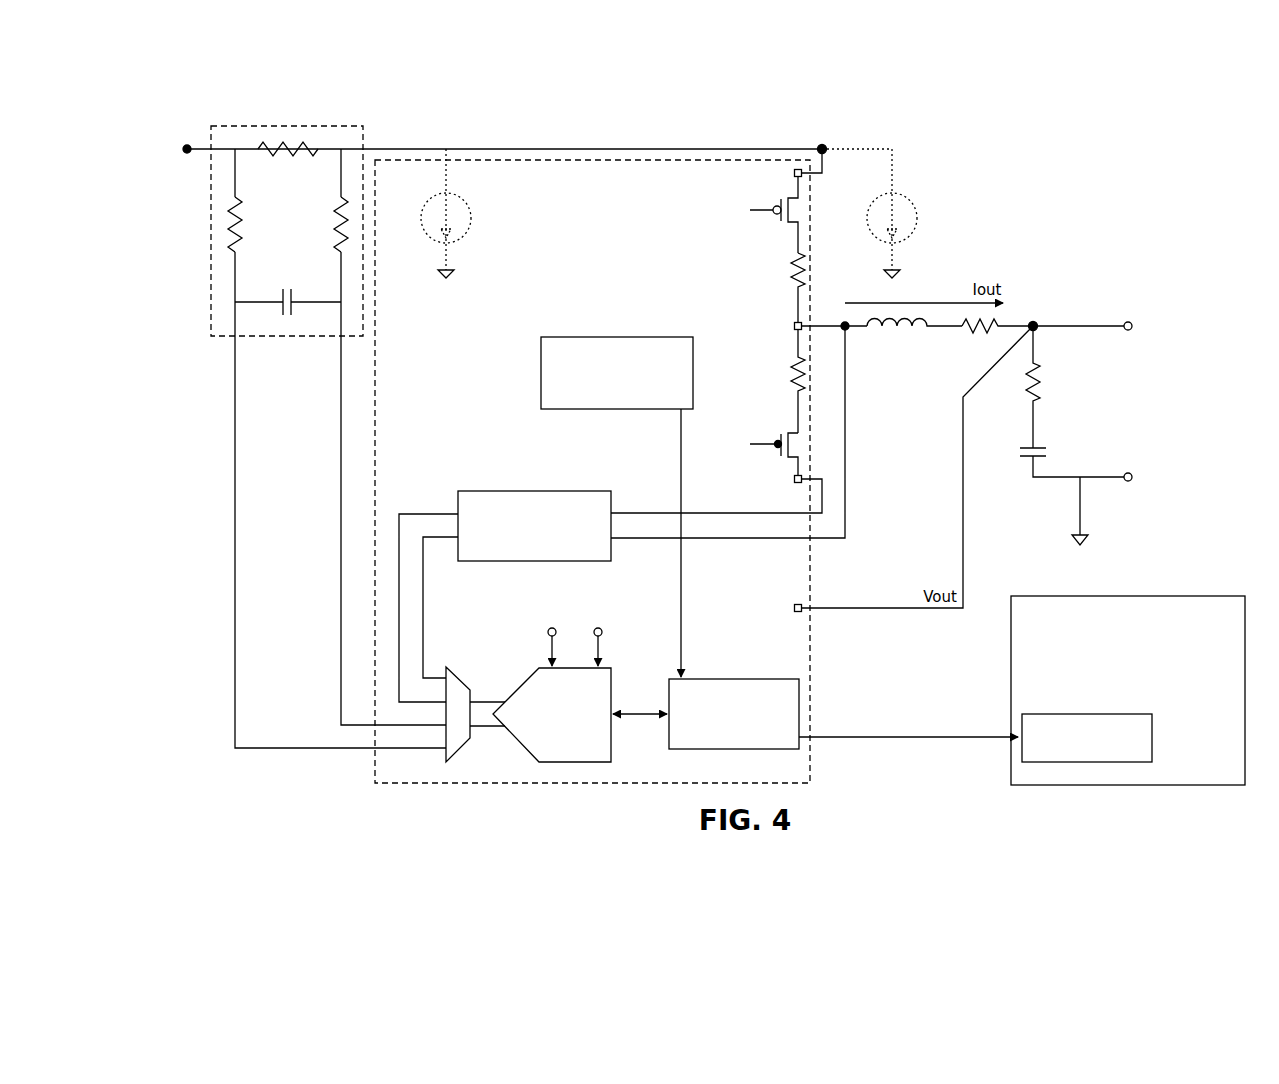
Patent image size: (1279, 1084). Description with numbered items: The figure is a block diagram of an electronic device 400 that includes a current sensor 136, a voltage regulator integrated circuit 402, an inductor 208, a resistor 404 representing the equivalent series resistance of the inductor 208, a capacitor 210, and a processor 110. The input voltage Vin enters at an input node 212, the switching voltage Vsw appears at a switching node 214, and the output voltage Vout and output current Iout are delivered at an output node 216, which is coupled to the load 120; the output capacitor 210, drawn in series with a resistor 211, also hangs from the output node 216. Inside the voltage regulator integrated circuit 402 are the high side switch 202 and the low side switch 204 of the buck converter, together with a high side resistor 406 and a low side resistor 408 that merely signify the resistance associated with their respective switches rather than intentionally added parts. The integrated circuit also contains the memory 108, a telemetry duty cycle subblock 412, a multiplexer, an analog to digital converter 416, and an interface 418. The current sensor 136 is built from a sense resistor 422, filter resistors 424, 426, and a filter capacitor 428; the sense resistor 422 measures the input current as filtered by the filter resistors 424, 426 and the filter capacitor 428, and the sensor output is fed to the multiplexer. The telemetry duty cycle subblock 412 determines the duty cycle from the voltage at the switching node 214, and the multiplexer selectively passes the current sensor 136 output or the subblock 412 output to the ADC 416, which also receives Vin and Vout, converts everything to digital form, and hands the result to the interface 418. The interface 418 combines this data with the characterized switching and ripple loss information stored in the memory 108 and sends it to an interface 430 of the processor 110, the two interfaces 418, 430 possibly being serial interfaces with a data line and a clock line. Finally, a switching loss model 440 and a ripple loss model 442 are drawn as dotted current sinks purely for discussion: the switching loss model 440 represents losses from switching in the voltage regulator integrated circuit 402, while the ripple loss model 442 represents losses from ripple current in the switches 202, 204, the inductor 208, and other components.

The electronic device 400 is at (697, 157).
The voltage regulator integrated circuit 402 is at (621, 433).
The memory 108 is at (617, 373).
The processor 110 is at (1128, 690).
The load 120 is at (1169, 401).
The current sensor 136 is at (328, 415).
The high side switch 202 is at (777, 195).
The low side switch 204 is at (777, 429).
The inductor 208 is at (914, 340).
The capacitor 210 is at (1022, 464).
The output resistor 211 is at (1052, 399).
The input node 212 is at (836, 137).
The switching node 214 is at (789, 306).
The output node 216 is at (1046, 314).
The resistor 404 is at (976, 354).
The high side resistor 406 is at (777, 253).
The low side resistor 408 is at (777, 353).
The telemetry duty cycle subblock 412 is at (534, 526).
The analog to digital converter 416 is at (554, 686).
The interface 418 is at (734, 714).
The sense resistor 422 is at (313, 136).
The filter resistor 424 is at (257, 221).
The filter resistor 426 is at (319, 221).
The filter capacitor 428 is at (302, 281).
The interface 430 is at (1087, 738).
The switching loss model 440 is at (471, 190).
The ripple loss model 442 is at (918, 184).